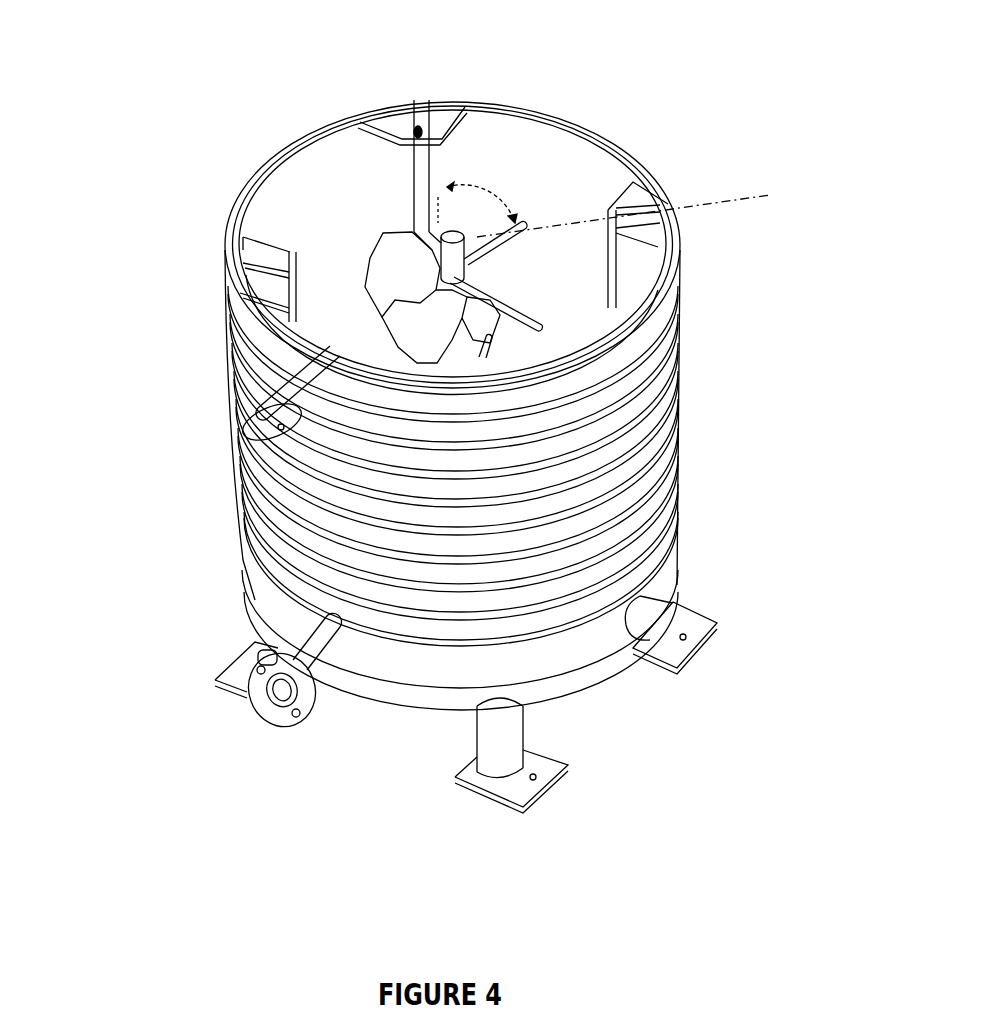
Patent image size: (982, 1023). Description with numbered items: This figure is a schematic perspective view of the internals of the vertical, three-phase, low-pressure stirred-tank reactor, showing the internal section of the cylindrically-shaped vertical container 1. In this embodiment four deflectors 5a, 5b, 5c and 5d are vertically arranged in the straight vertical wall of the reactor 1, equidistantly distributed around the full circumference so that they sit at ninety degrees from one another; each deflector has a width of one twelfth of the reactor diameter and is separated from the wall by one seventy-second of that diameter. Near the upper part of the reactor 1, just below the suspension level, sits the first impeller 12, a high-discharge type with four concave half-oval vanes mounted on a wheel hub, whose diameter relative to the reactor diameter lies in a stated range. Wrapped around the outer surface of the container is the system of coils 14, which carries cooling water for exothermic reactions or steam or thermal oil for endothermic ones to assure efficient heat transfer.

The reactor 1 is at (190, 462).
The deflector 5a is at (262, 285).
The deflector 5b is at (413, 100).
The deflector 5c is at (633, 252).
The deflector 5d is at (503, 355).
The first impeller 12 is at (483, 284).
The system of coils 14 is at (684, 515).